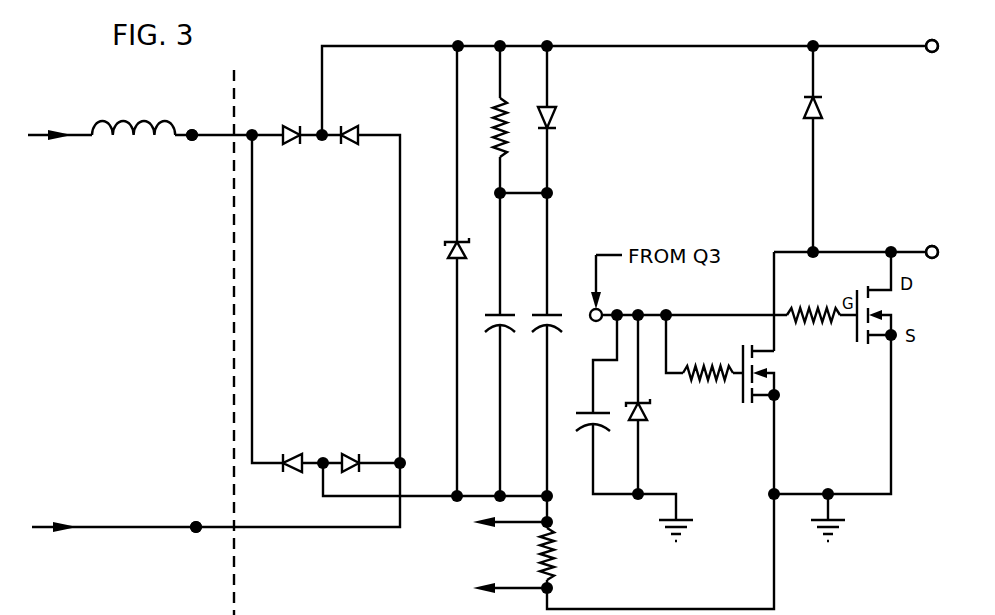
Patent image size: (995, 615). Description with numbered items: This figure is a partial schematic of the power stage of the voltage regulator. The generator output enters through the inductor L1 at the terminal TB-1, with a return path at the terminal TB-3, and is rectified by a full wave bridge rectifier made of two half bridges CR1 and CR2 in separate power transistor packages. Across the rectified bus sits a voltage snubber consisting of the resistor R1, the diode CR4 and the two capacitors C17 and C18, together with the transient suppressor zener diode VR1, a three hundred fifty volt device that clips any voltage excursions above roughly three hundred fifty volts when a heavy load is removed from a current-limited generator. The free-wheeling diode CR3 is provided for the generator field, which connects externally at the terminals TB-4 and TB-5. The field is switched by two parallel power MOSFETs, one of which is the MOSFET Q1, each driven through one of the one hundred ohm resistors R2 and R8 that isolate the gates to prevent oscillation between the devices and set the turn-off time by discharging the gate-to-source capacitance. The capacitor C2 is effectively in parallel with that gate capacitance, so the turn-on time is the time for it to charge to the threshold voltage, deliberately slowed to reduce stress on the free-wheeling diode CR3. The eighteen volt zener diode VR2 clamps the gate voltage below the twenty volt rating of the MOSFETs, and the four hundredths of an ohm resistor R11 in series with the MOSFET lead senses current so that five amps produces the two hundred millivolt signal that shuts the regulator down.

The inductor L1 is at (133, 110).
The terminal block terminal 1 TB-1 is at (203, 120).
The terminal block terminal 3 TB-3 is at (181, 513).
The terminal block terminal 4 TB-4 is at (907, 30).
The terminal block terminal 5 TB-5 is at (921, 236).
The half bridge CR1 is at (320, 151).
The half bridge CR2 is at (321, 450).
The free-wheeling diode CR3 is at (839, 109).
The diode CR4 is at (573, 114).
The resistor R1 is at (486, 127).
The resistor R2 is at (708, 359).
The resistor R8 is at (813, 299).
The resistor R11 is at (569, 554).
The zener type transient suppressor VR1 is at (437, 246).
The zener diode VR2 is at (660, 412).
The capacitor C2 is at (581, 411).
The capacitor C17 is at (513, 306).
The capacitor C18 is at (560, 306).
The power MOSFET Q1 is at (769, 375).